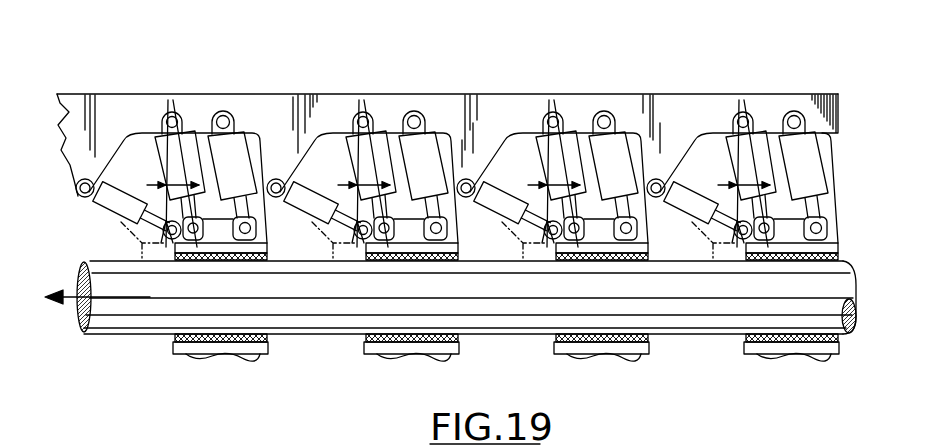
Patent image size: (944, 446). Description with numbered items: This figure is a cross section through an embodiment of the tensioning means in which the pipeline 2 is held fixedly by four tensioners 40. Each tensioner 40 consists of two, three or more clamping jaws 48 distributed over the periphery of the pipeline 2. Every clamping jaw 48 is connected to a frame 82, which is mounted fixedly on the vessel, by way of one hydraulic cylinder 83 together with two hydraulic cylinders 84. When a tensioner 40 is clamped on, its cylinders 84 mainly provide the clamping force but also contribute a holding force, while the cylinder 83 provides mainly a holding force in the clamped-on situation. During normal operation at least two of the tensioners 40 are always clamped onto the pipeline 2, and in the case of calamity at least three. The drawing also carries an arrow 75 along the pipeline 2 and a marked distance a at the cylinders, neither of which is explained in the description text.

The pipeline 2 is at (147, 312).
The tensioner 40 is at (257, 86).
The clamping jaw 48 is at (268, 243).
The direction of movement arrow 75 is at (70, 303).
The frame 82 is at (667, 105).
The hydraulic cylinder 83 is at (138, 180).
The hydraulic cylinder 84 is at (158, 143).
The offset distance a is at (170, 180).